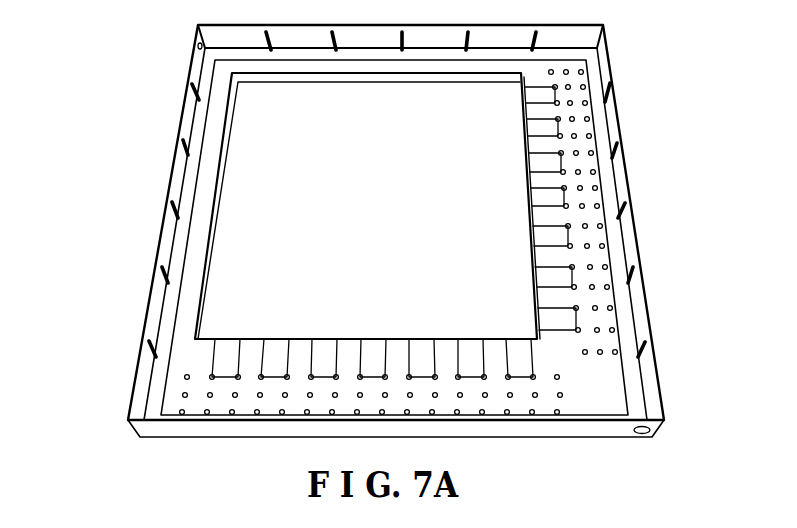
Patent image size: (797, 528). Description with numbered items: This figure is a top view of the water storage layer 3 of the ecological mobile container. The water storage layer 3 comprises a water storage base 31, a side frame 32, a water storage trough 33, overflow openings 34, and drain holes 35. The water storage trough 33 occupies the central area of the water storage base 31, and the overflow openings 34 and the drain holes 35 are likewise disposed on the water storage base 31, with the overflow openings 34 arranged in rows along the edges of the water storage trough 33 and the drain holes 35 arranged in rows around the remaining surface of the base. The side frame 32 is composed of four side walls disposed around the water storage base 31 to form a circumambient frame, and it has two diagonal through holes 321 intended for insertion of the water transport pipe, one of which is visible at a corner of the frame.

The water storage layer 3 is at (124, 167).
The water storage base 31 is at (588, 393).
The side frame 32 is at (652, 367).
The diagonal through hole 321 is at (197, 41).
The water storage trough 33 is at (460, 132).
The overflow opening 34 is at (540, 203).
The drain hole 35 is at (596, 329).